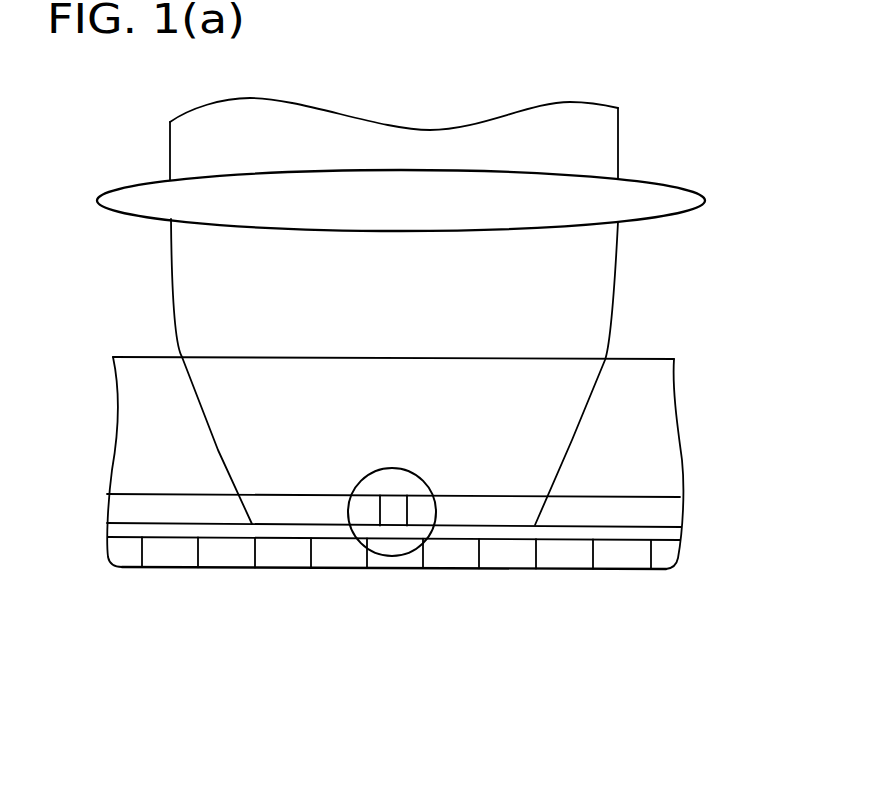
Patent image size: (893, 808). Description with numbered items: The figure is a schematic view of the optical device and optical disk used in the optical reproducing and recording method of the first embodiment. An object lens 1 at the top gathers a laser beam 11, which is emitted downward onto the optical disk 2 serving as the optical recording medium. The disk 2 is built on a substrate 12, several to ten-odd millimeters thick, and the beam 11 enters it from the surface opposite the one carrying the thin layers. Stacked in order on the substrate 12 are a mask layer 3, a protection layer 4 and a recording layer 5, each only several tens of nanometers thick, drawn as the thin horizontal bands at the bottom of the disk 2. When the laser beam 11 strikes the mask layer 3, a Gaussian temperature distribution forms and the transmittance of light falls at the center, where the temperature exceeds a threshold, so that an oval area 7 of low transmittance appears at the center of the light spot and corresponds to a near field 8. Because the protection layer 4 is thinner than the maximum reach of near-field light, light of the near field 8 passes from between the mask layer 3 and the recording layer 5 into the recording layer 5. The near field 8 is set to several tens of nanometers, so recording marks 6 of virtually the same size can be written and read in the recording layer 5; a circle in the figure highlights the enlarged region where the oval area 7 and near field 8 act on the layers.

The object lens 1 is at (677, 192).
The optical disk 2 is at (717, 380).
The mask layer 3 is at (673, 515).
The protection layer 4 is at (672, 537).
The recording layer 5 is at (672, 558).
The recording mark 6 is at (290, 557).
The oval area 7 is at (378, 515).
The near field 8 is at (437, 532).
The laser beam 11 is at (592, 305).
The substrate 12 is at (663, 428).